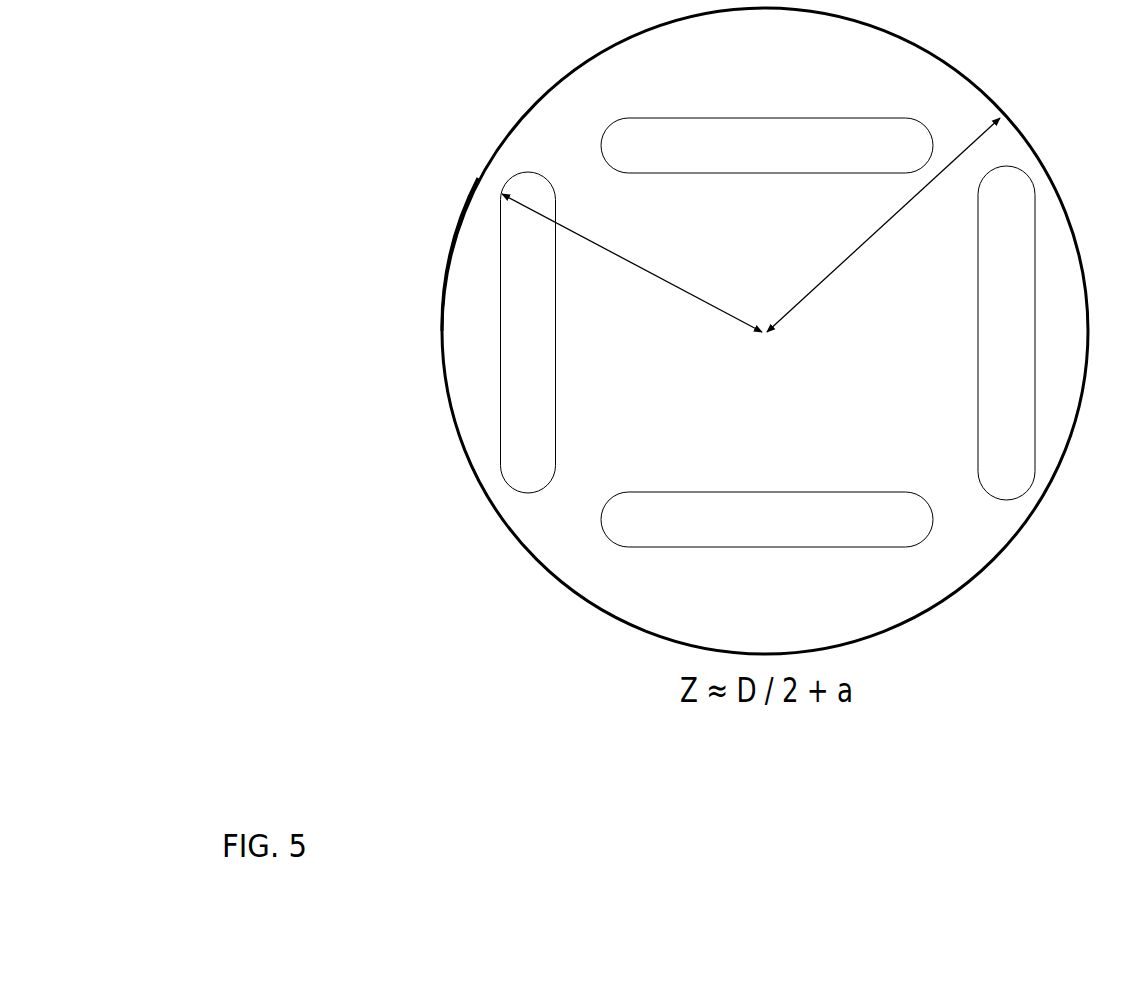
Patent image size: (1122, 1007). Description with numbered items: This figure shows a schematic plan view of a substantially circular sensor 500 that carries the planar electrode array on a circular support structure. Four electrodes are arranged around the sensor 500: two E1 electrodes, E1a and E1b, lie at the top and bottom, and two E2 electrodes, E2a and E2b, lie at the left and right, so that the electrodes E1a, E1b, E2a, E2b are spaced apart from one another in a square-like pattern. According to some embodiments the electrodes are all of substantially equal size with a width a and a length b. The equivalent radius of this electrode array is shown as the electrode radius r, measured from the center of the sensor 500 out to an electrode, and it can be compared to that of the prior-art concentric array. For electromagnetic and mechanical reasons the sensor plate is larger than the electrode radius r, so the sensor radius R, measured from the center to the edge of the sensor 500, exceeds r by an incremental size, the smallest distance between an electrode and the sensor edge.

The sensor 500 is at (772, 70).
The electrode E1a is at (767, 145).
The electrode E1b is at (767, 519).
The electrode E2a is at (528, 332).
The electrode E2b is at (1006, 333).
The electrode radius r is at (632, 265).
The sensor radius R is at (883, 227).